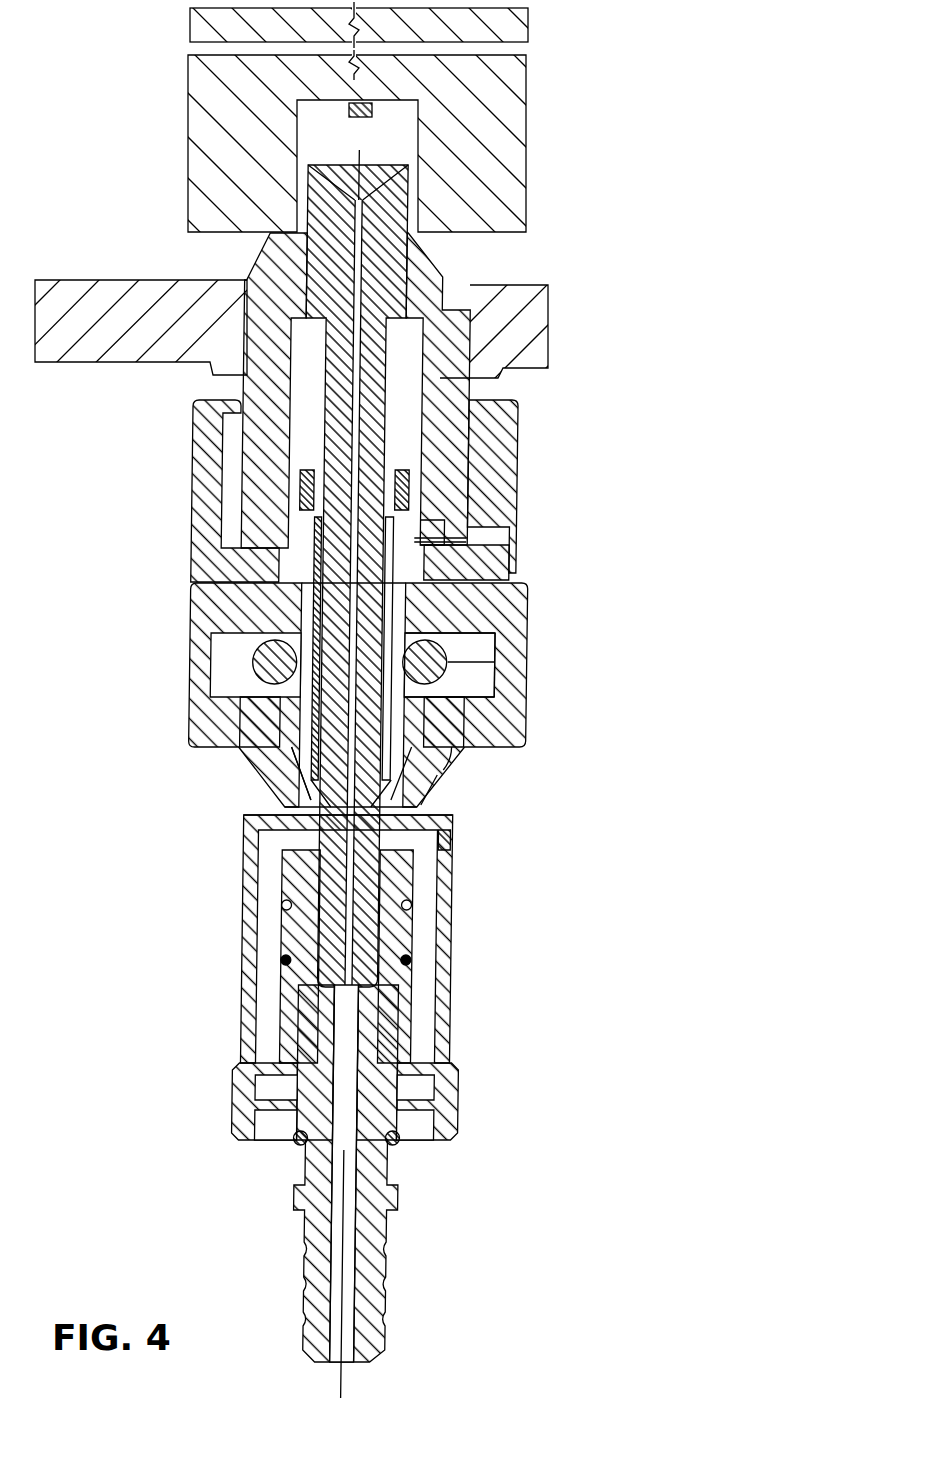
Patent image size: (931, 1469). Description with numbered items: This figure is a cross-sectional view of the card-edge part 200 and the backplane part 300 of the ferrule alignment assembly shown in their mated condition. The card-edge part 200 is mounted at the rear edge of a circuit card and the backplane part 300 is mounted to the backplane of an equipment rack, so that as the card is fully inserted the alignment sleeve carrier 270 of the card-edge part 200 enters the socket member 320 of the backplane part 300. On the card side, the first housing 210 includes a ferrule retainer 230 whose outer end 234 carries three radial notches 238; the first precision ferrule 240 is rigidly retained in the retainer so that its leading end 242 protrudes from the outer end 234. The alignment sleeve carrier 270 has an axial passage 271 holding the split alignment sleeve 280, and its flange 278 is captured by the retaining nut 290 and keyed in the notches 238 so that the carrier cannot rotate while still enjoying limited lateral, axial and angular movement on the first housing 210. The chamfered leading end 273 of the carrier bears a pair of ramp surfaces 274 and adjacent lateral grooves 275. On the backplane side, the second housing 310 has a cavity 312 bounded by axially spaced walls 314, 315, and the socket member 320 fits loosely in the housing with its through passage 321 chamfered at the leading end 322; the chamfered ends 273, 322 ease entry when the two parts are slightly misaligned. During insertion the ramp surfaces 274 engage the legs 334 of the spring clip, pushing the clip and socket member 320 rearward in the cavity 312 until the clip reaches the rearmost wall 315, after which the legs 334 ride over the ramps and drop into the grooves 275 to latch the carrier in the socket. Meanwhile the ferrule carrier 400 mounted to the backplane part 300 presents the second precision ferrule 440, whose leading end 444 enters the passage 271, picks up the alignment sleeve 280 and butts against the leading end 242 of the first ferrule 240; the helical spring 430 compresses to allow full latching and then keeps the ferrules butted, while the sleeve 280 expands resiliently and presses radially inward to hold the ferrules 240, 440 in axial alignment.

The card-edge part 200 is at (547, 136).
The first housing 210 is at (500, 376).
The ferrule retainer 230 is at (440, 440).
The outer end 234 is at (470, 557).
The radially extending notches 238 is at (436, 530).
The first precision ferrule 240 is at (330, 373).
The leading end 242 is at (313, 618).
The alignment sleeve carrier 270 is at (440, 720).
The passage 271 is at (300, 783).
The leading end 273 is at (453, 845).
The ramp surfaces 274 is at (438, 797).
The laterally extending grooves 275 is at (441, 778).
The flange 278 is at (452, 539).
The split alignment sleeve 280 is at (292, 752).
The retaining nut 290 is at (222, 476).
The backplane part 300 is at (529, 902).
The second housing 310 is at (447, 663).
The cavity 312 is at (530, 681).
The wall 314 is at (527, 655).
The wall 315 is at (540, 705).
The socket member 320 is at (446, 762).
The through passage 321 is at (453, 862).
The leading end 322 is at (472, 580).
The legs 334 is at (480, 673).
The ferrule carrier 400 is at (456, 1228).
The helical spring 430 is at (287, 976).
The second precision ferrule 440 is at (246, 846).
The leading end 444 is at (285, 690).